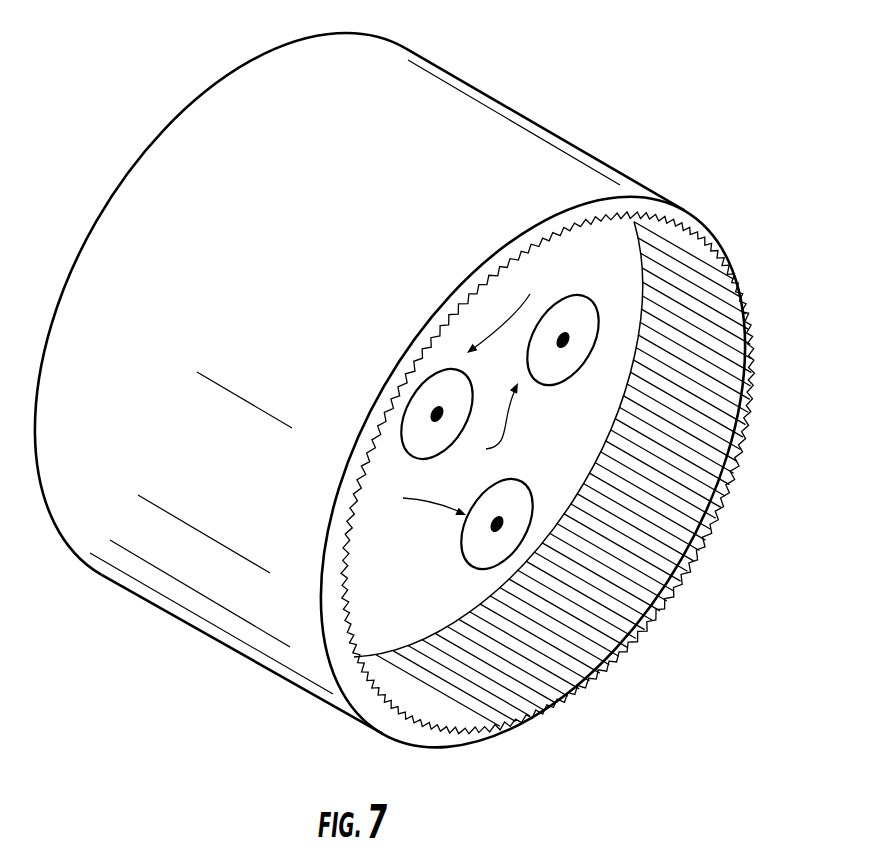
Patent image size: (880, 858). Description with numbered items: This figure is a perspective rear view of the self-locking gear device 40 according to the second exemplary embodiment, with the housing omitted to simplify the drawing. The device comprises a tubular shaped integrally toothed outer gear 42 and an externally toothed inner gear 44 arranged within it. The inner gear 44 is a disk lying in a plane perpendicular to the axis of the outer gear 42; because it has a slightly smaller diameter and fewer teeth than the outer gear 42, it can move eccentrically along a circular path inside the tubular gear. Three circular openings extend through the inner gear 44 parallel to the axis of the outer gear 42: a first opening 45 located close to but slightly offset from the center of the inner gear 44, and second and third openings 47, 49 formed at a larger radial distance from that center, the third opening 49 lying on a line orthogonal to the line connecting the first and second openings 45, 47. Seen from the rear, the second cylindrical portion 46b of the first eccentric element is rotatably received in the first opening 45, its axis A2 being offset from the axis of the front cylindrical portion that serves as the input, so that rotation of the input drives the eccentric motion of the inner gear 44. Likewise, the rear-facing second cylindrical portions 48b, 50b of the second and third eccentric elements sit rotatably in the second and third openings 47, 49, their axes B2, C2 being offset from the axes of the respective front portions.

The self-locking gear device 40 is at (723, 62).
The tubular shaped integrally toothed outer gear 42 is at (703, 217).
The externally toothed inner gear 44 is at (613, 218).
The first opening 45 is at (506, 311).
The second cylindrical portion of the first eccentric element 46b is at (417, 407).
The axis of the second cylindrical portion of the first eccentric element A2 is at (437, 412).
The second opening 47 is at (491, 428).
The second cylindrical portion of the second eccentric element 48b is at (560, 366).
The axis of the second cylindrical portion of the second eccentric element B2 is at (565, 340).
The third opening 49 is at (423, 499).
The second cylindrical portion of the third eccentric element 50b is at (477, 550).
The axis of the second cylindrical portion of the third eccentric element C2 is at (495, 527).